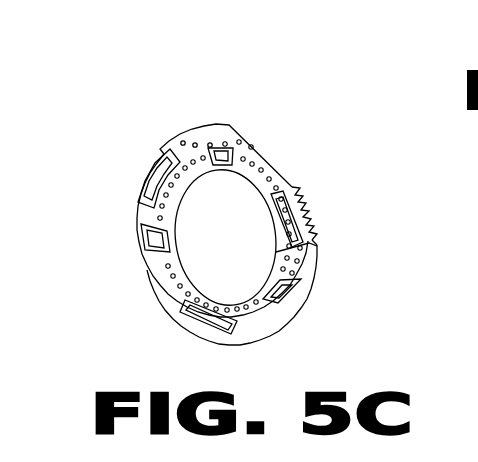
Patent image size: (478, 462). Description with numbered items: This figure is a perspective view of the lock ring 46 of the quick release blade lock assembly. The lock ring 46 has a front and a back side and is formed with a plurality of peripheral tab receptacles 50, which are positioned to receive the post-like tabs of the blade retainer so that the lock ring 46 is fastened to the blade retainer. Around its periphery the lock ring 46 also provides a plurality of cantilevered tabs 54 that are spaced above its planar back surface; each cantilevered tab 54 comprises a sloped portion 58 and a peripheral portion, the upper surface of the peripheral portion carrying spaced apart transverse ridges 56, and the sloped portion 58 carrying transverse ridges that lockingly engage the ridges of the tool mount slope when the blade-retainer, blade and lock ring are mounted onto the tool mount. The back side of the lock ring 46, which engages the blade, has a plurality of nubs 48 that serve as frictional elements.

The lock ring 46 is at (258, 152).
The nubs 48 is at (210, 145).
The peripheral tab receptacles 50 is at (222, 150).
The cantilevered tabs 54 is at (140, 170).
The transverse ridges 56 is at (311, 224).
The sloped portion 58 is at (284, 188).